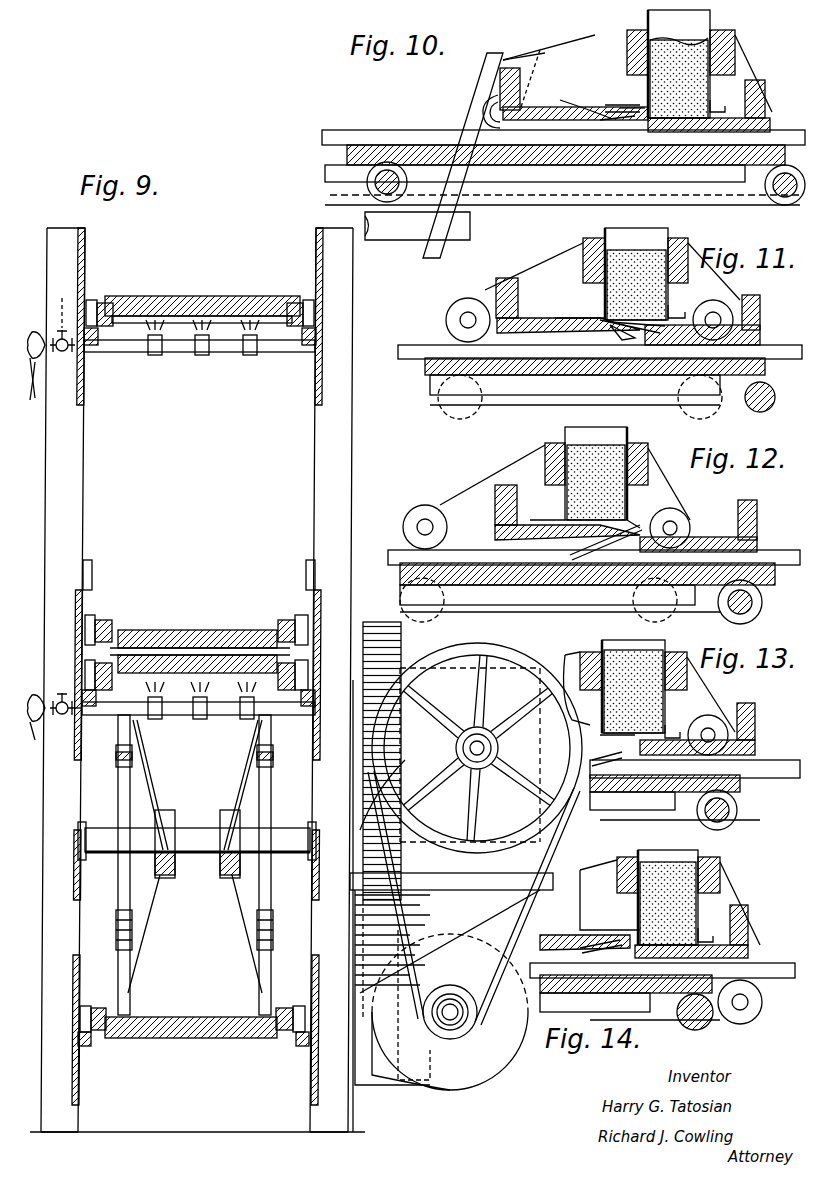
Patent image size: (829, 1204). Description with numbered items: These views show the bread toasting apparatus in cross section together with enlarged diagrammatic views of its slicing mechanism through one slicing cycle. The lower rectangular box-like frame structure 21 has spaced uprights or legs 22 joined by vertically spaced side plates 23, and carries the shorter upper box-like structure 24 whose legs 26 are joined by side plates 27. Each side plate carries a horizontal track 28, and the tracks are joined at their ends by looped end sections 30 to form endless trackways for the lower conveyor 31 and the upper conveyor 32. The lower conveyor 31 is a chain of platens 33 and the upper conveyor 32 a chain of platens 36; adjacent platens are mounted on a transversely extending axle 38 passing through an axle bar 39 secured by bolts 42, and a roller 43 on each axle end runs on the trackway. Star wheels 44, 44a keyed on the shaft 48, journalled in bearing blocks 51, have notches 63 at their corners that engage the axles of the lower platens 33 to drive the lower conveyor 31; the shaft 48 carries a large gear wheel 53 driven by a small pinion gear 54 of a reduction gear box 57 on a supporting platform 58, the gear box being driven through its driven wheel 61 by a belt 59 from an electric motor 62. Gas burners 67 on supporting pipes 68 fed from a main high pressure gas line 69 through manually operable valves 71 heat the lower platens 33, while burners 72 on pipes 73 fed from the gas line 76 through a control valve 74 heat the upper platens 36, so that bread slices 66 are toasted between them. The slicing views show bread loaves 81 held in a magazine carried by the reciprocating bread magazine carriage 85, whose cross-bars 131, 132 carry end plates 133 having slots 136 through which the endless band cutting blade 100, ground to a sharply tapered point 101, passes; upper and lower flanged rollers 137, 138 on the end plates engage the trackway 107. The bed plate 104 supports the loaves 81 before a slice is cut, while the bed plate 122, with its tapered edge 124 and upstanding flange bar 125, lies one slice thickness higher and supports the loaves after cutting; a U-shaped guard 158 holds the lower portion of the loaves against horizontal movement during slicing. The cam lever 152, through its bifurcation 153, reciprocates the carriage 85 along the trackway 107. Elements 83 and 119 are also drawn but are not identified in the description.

In FIG. 9, the lower rectangular box-like frame structure 21 is at (305, 1108).
In FIG. 9, the uprights or legs 22 is at (58, 928).
In FIG. 9, the side plates 23 is at (108, 800).
In FIG. 9, the upper rectangular box-like structure 24 is at (312, 248).
In FIG. 9, the uprights or legs 26 is at (68, 482).
In FIG. 9, the side plates 27 is at (86, 253).
In FIG. 9, the horizontal track 28 is at (100, 345).
In FIG. 10, the horizontal track 28 is at (325, 182).
In FIG. 11, the horizontal track 28 is at (485, 406).
In FIG. 9, the looped end sections 30 is at (92, 580).
In FIG. 9, the lower conveyor 31 is at (222, 716).
In FIG. 10, the lower conveyor 31 is at (322, 155).
In FIG. 9, the upper conveyor 32 is at (160, 618).
In FIG. 9, the platens 33 is at (182, 716).
In FIG. 10, the platens 33 is at (370, 145).
In FIG. 11, the platens 33 is at (595, 366).
In FIG. 12, the platens 33 is at (710, 565).
In FIG. 13, the platens 33 is at (748, 778).
In FIG. 14, the platens 33 is at (640, 990).
In FIG. 9, the platens 36 is at (150, 296).
In FIG. 9, the axle 38 is at (180, 630).
In FIG. 10, the axle 38 is at (378, 195).
In FIG. 11, the axle 38 is at (770, 405).
In FIG. 12, the axle 38 is at (755, 618).
In FIG. 13, the axle 38 is at (740, 815).
In FIG. 14, the axle 38 is at (712, 1025).
In FIG. 9, the axle bar 39 is at (265, 622).
In FIG. 9, the bolts 42 is at (100, 332).
In FIG. 9, the roller 43 is at (92, 300).
In FIG. 10, the roller 43 is at (335, 195).
In FIG. 12, the roller 43 is at (748, 625).
In FIG. 13, the roller 43 is at (735, 826).
In FIG. 14, the roller 43 is at (585, 1005).
In FIG. 9, the star wheel 44 is at (145, 950).
In FIG. 9, the star wheel 44a is at (248, 950).
In FIG. 9, the shaft 48 is at (185, 832).
In FIG. 9, the bearing blocks 51 is at (118, 858).
In FIG. 9, the gear wheel 53 is at (380, 622).
In FIG. 9, the pinion gear 54 is at (368, 785).
In FIG. 9, the reduction gear box 57 is at (458, 700).
In FIG. 9, the supporting platform 58 is at (545, 893).
In FIG. 9, the belt 59 is at (480, 992).
In FIG. 9, the driven wheel 61 is at (560, 805).
In FIG. 9, the electric motor 62 is at (455, 1092).
In FIG. 9, the notches 63 is at (132, 756).
In FIG. 11, the bread slices 66 is at (575, 390).
In FIG. 12, the bread slices 66 is at (560, 598).
In FIG. 13, the bread slices 66 is at (675, 806).
In FIG. 14, the bread slices 66 is at (582, 938).
In FIG. 9, the gas burners 67 is at (160, 719).
In FIG. 9, the supporting pipe 68 is at (88, 716).
In FIG. 9, the main high pressure gas line 69 is at (32, 729).
In FIG. 9, the valve 71 is at (50, 700).
In FIG. 9, the gas burners 72 is at (250, 355).
In FIG. 9, the supporting pipe 73 is at (185, 352).
In FIG. 9, the control valve 74 is at (62, 310).
In FIG. 9, the main high pressure gas line 76 is at (33, 377).
In FIG. 10, the bread loaves 81 is at (672, 38).
In FIG. 11, the bread loaves 81 is at (635, 245).
In FIG. 12, the bread loaves 81 is at (592, 445).
In FIG. 13, the bread loaves 81 is at (625, 655).
In FIG. 14, the bread loaves 81 is at (652, 910).
In FIG. 10, the tube wall 83 is at (648, 22).
In FIG. 11, the tube wall 83 is at (650, 236).
In FIG. 12, the tube wall 83 is at (628, 436).
In FIG. 13, the tube wall 83 is at (604, 642).
In FIG. 14, the tube wall 83 is at (698, 852).
In FIG. 10, the bread magazine carriage 85 is at (555, 52).
In FIG. 11, the bread magazine carriage 85 is at (546, 250).
In FIG. 12, the bread magazine carriage 85 is at (508, 450).
In FIG. 13, the bread magazine carriage 85 is at (576, 650).
In FIG. 14, the bread magazine carriage 85 is at (598, 862).
In FIG. 10, the endless band cutting blade 100 is at (615, 104).
In FIG. 11, the endless band cutting blade 100 is at (606, 308).
In FIG. 13, the endless band cutting blade 100 is at (640, 762).
In FIG. 14, the endless band cutting blade 100 is at (600, 948).
In FIG. 10, the tapered point 101 is at (630, 126).
In FIG. 12, the tapered point 101 is at (607, 542).
In FIG. 10, the bed plate 104 is at (772, 128).
In FIG. 11, the bed plate 104 is at (762, 338).
In FIG. 12, the bed plate 104 is at (758, 545).
In FIG. 13, the bed plate 104 is at (697, 747).
In FIG. 14, the bed plate 104 is at (691, 951).
In FIG. 10, the trackway 107 is at (340, 130).
In FIG. 11, the trackway 107 is at (420, 345).
In FIG. 12, the trackway 107 is at (400, 550).
In FIG. 13, the trackway 107 is at (780, 778).
In FIG. 14, the trackway 107 is at (775, 978).
In FIG. 10, the stop block 119 is at (762, 85).
In FIG. 11, the stop block 119 is at (762, 312).
In FIG. 12, the stop block 119 is at (758, 515).
In FIG. 13, the stop block 119 is at (758, 720).
In FIG. 14, the stop block 119 is at (750, 915).
In FIG. 10, the bed plate 122 is at (555, 107).
In FIG. 11, the bed plate 122 is at (515, 318).
In FIG. 12, the bed plate 122 is at (495, 535).
In FIG. 10, the tapered edge 124 is at (585, 112).
In FIG. 11, the tapered edge 124 is at (592, 335).
In FIG. 10, the flange bar 125 is at (508, 68).
In FIG. 11, the flange bar 125 is at (500, 278).
In FIG. 12, the flange bar 125 is at (495, 496).
In FIG. 10, the cross-bar 131 is at (630, 48).
In FIG. 11, the cross-bar 131 is at (585, 258).
In FIG. 12, the cross-bar 131 is at (545, 458).
In FIG. 13, the cross-bar 131 is at (580, 655).
In FIG. 14, the cross-bar 131 is at (628, 857).
In FIG. 10, the cross-bar 132 is at (732, 50).
In FIG. 11, the cross-bar 132 is at (690, 245).
In FIG. 12, the cross-bar 132 is at (670, 448).
In FIG. 13, the cross-bar 132 is at (690, 655).
In FIG. 14, the cross-bar 132 is at (722, 872).
In FIG. 10, the end plates 133 is at (548, 80).
In FIG. 11, the end plates 133 is at (500, 292).
In FIG. 12, the end plates 133 is at (468, 490).
In FIG. 13, the end plates 133 is at (725, 705).
In FIG. 14, the end plates 133 is at (738, 900).
In FIG. 10, the aperture 136 is at (640, 105).
In FIG. 11, the aperture 136 is at (570, 322).
In FIG. 12, the aperture 136 is at (545, 520).
In FIG. 10, the flanged roller 137 is at (492, 100).
In FIG. 11, the flanged roller 137 is at (455, 305).
In FIG. 12, the flanged roller 137 is at (412, 510).
In FIG. 14, the flanged roller 137 is at (758, 985).
In FIG. 9, the flanged roller 138 is at (180, 720).
In FIG. 10, the flanged roller 138 is at (520, 185).
In FIG. 11, the flanged roller 138 is at (455, 402).
In FIG. 12, the flanged roller 138 is at (412, 608).
In FIG. 13, the flanged roller 138 is at (654, 801).
In FIG. 14, the flanged roller 138 is at (758, 1010).
In FIG. 10, the cam lever 152 is at (468, 112).
In FIG. 10, the bifurcations 153 is at (535, 69).
In FIG. 10, the U-shaped guard 158 is at (720, 106).
In FIG. 11, the U-shaped guard 158 is at (680, 318).
In FIG. 12, the U-shaped guard 158 is at (635, 522).
In FIG. 13, the U-shaped guard 158 is at (675, 732).
In FIG. 14, the U-shaped guard 158 is at (708, 932).